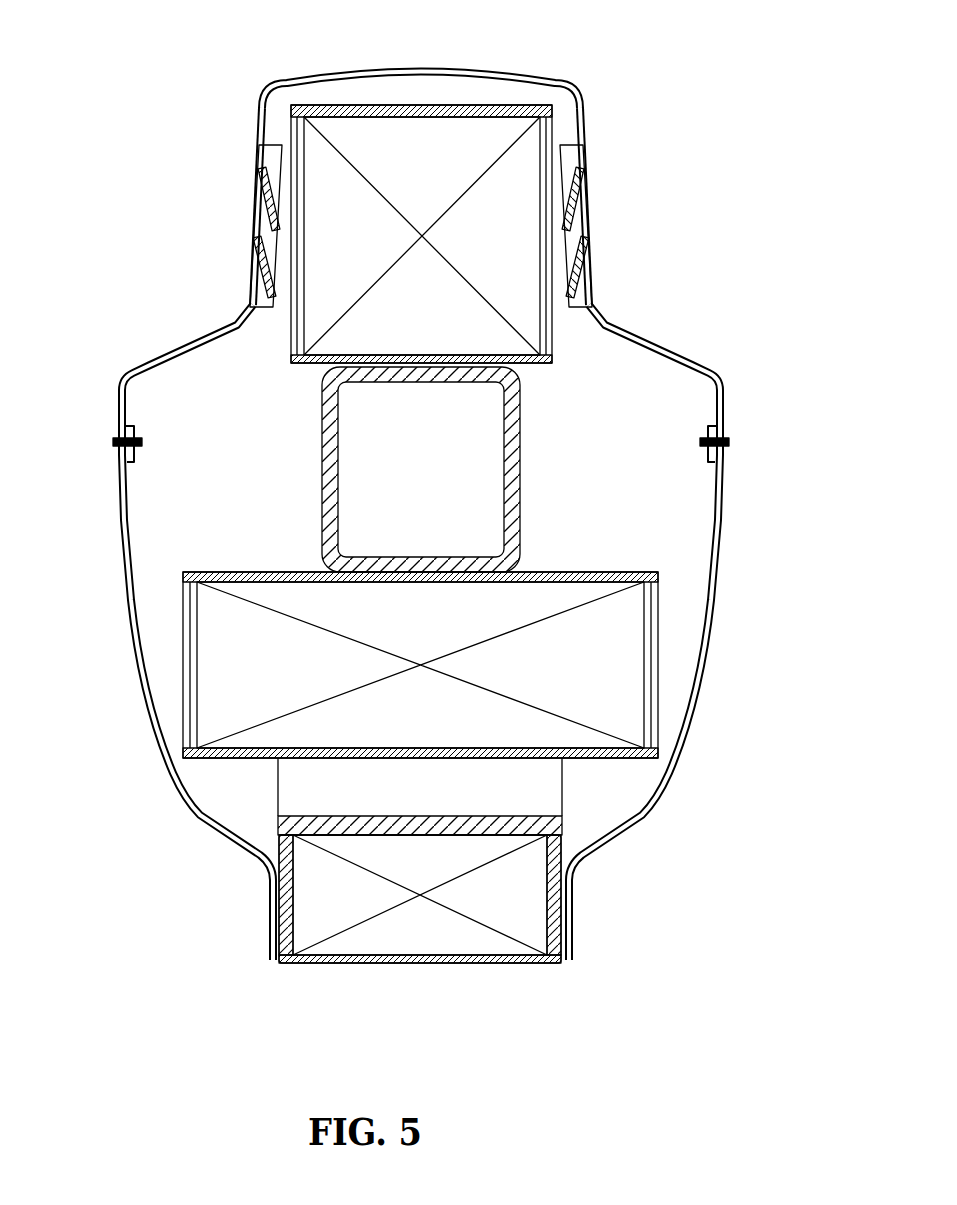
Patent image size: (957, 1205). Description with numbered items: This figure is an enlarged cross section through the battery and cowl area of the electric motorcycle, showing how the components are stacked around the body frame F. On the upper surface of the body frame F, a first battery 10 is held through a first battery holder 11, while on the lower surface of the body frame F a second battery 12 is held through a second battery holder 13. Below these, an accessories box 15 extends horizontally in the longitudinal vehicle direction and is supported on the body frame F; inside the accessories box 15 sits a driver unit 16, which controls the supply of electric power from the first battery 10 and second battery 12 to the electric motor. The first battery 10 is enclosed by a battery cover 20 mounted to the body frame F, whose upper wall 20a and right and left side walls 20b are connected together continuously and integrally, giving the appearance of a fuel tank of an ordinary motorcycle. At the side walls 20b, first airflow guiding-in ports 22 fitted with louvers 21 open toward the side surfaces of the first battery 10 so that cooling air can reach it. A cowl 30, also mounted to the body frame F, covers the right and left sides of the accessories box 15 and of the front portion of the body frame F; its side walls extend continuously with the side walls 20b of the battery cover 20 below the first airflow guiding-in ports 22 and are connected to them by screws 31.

The first battery 10 is at (440, 178).
The first battery holder 11 is at (291, 366).
The second battery 12 is at (583, 683).
The second battery holder 13 is at (581, 571).
The accessories box 15 is at (442, 966).
The driver unit 16 is at (520, 908).
The battery cover 20 is at (467, 60).
The upper wall 20a is at (430, 68).
The side walls 20b is at (186, 352).
The louvers 21 is at (263, 214).
The first airflow guiding-in ports 22 is at (258, 162).
The cowl 30 is at (738, 546).
The screws 31 is at (116, 440).
The body frame F is at (514, 462).